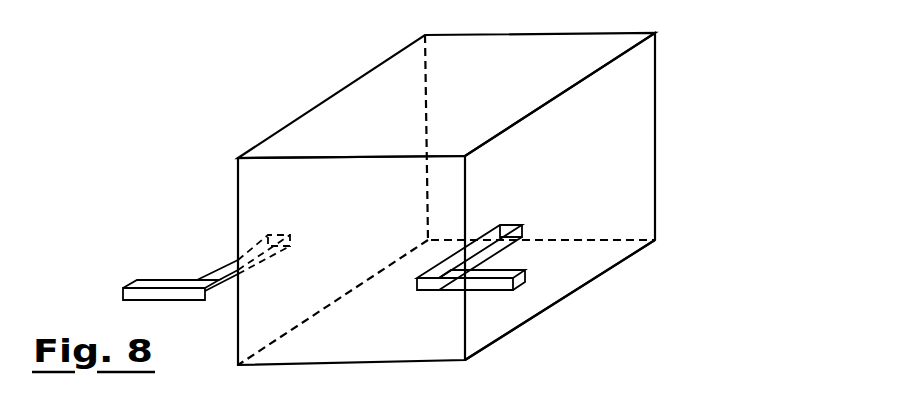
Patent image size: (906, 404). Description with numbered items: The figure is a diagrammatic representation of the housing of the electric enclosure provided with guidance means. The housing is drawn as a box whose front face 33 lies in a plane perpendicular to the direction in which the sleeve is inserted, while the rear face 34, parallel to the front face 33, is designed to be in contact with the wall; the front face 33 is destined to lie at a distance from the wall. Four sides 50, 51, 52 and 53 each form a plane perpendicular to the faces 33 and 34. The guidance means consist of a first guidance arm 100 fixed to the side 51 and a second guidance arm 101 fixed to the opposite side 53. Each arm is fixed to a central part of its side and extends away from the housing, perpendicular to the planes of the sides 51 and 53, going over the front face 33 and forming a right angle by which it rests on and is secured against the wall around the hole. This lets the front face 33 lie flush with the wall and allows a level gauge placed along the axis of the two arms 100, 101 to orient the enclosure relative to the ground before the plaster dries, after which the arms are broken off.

The side 50 is at (450, 186).
The side 51 is at (577, 257).
The side 52 is at (482, 333).
The side 53 is at (327, 138).
The front face 33 is at (272, 193).
The rear face 34 is at (630, 128).
The first guidance arm 100 is at (503, 228).
The second guidance arm 101 is at (168, 282).